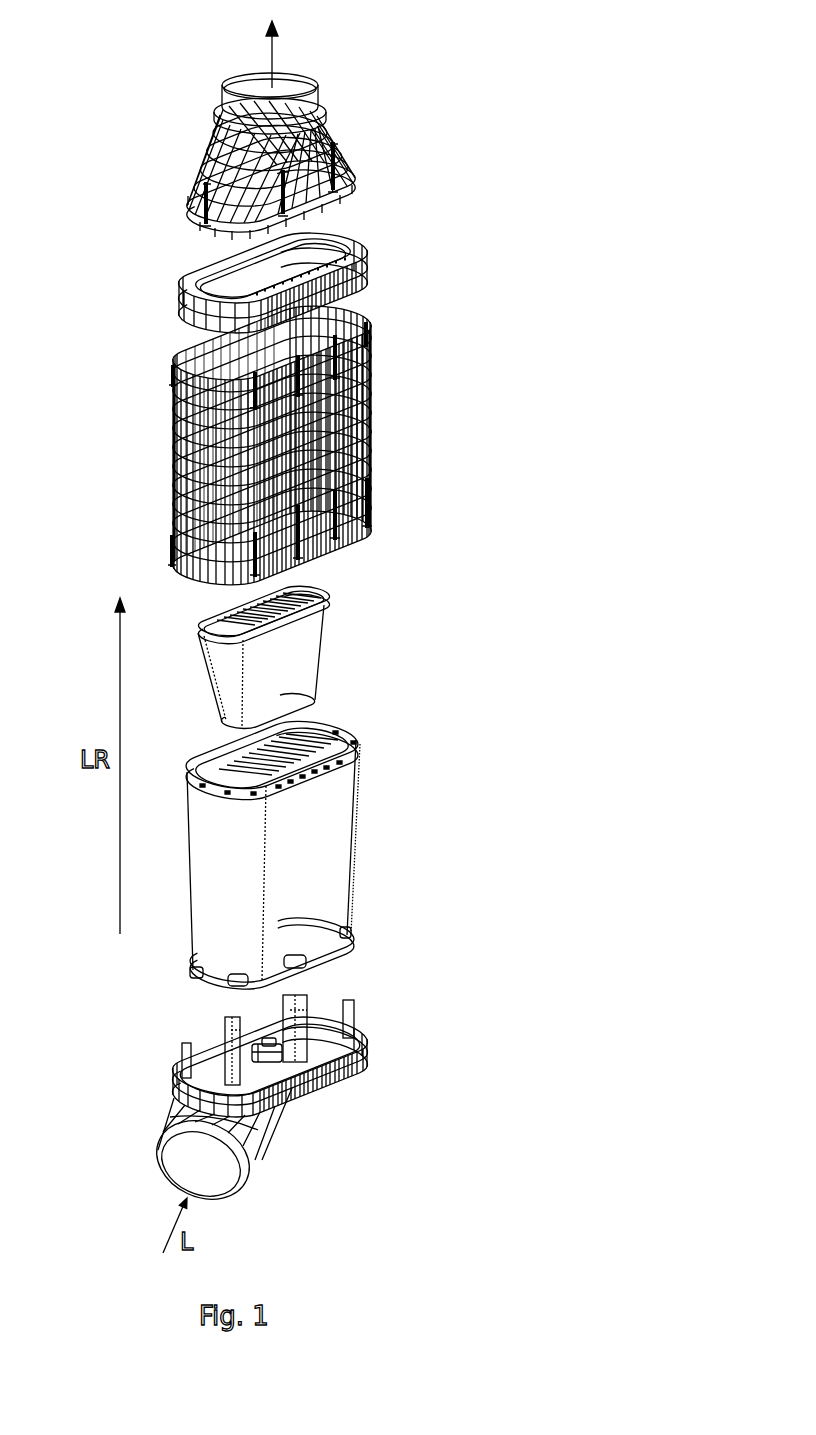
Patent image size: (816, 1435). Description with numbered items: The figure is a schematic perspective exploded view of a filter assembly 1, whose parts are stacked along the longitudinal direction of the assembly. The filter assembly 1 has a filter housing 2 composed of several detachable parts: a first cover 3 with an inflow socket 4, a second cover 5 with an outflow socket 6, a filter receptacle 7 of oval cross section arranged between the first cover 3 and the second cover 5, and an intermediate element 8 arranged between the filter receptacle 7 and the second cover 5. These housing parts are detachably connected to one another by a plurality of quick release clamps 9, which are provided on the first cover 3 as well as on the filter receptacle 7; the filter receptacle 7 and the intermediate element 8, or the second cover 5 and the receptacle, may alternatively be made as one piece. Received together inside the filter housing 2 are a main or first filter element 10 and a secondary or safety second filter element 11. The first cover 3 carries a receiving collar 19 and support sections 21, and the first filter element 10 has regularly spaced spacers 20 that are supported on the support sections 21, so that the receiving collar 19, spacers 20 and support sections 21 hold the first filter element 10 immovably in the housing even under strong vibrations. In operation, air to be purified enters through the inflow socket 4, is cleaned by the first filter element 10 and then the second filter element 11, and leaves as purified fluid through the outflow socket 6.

The filter assembly 1 is at (131, 64).
The filter housing 2 is at (84, 501).
The first cover 3 is at (388, 1055).
The inflow socket 4 is at (240, 1155).
The second cover 5 is at (360, 146).
The outflow socket 6 is at (313, 100).
The filter receptacle 7 is at (370, 423).
The intermediate element 8 is at (363, 252).
The quick release clamps 9 is at (333, 187).
The first filter element 10 is at (358, 822).
The second filter element 11 is at (325, 635).
The receiving collar 19 is at (272, 1065).
The spacers 20 is at (307, 952).
The support sections 21 is at (228, 1023).